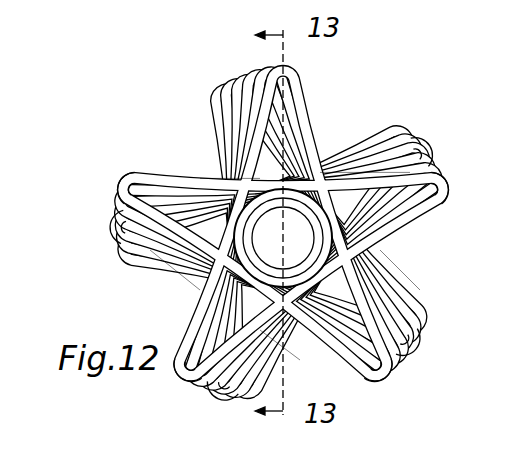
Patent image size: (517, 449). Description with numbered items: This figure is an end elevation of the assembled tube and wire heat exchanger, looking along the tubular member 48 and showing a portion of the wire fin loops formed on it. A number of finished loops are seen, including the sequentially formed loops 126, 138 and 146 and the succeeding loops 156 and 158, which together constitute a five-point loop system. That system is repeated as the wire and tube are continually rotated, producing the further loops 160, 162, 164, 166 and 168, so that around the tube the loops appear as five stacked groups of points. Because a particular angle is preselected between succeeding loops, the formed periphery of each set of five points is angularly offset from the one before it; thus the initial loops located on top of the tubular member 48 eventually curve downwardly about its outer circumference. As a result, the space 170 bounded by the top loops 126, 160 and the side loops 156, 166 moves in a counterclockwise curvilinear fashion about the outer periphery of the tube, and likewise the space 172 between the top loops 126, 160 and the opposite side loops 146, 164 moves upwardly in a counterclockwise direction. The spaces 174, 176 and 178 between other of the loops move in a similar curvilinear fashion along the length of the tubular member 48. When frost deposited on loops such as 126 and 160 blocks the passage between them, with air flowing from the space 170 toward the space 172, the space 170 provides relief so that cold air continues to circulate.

The tubular member 48 is at (307, 226).
The loop 126 is at (380, 72).
The loop 160 is at (271, 62).
The loop 156 is at (120, 170).
The loop 146 is at (450, 196).
The loop 138 is at (178, 378).
The loop 158 is at (382, 388).
The loop 164 is at (440, 172).
The loop 166 is at (112, 200).
The loop 162 is at (196, 392).
The loop 168 is at (393, 378).
The space 170 is at (203, 161).
The space 172 is at (372, 129).
The space 174 is at (175, 313).
The space 176 is at (323, 380).
The space 178 is at (443, 268).